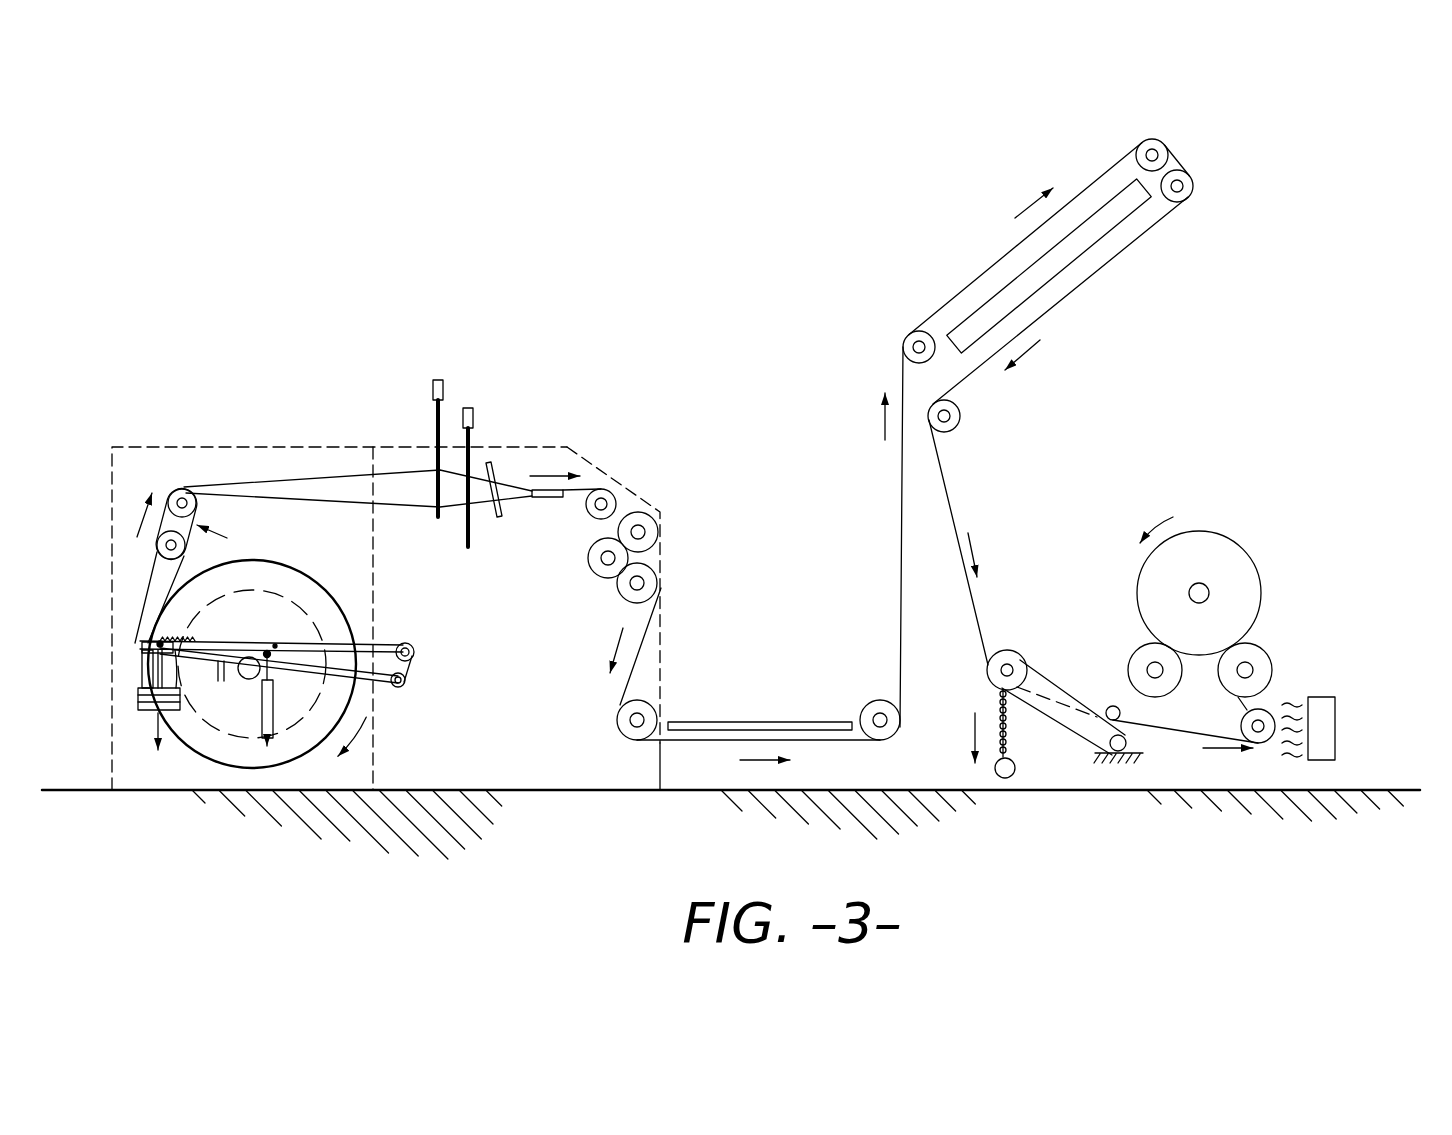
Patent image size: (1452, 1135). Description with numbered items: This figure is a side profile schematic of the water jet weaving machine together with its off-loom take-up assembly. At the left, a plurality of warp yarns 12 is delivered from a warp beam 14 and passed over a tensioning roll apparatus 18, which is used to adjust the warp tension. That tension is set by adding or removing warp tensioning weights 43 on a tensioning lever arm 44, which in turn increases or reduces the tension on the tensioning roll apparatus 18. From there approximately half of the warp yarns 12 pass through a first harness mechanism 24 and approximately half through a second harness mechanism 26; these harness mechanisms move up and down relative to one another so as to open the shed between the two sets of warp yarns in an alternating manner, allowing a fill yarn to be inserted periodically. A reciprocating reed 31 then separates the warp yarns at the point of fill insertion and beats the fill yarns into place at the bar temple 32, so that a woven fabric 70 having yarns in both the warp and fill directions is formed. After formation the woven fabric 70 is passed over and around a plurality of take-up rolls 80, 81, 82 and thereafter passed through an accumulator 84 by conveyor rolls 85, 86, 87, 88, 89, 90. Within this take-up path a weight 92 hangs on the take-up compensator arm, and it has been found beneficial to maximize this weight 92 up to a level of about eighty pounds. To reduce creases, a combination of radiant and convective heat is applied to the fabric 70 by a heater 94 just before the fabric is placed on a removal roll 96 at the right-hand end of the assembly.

The warp yarns 12 is at (220, 483).
The warp beam 14 is at (178, 742).
The tensioning roll apparatus 18 is at (156, 474).
The first harness mechanism 24 is at (440, 378).
The second harness mechanism 26 is at (470, 408).
The reciprocating reed 31 is at (492, 460).
The bar temple 32 is at (552, 498).
The warp tensioning weights 43 is at (138, 700).
The tensioning lever arm 44 is at (190, 630).
The woven fabric 70 is at (593, 490).
The take-up roll 80 is at (645, 520).
The take-up roll 81 is at (590, 563).
The take-up roll 82 is at (648, 573).
The accumulator 84 is at (930, 222).
The conveyor roll 85 is at (643, 703).
The conveyor roll 86 is at (880, 702).
The conveyor roll 87 is at (917, 337).
The conveyor roll 88 is at (1152, 147).
The conveyor roll 89 is at (1185, 178).
The conveyor roll 90 is at (950, 427).
The weight 92 is at (1013, 772).
The heater 94 is at (1322, 697).
The removal roll 96 is at (1235, 542).